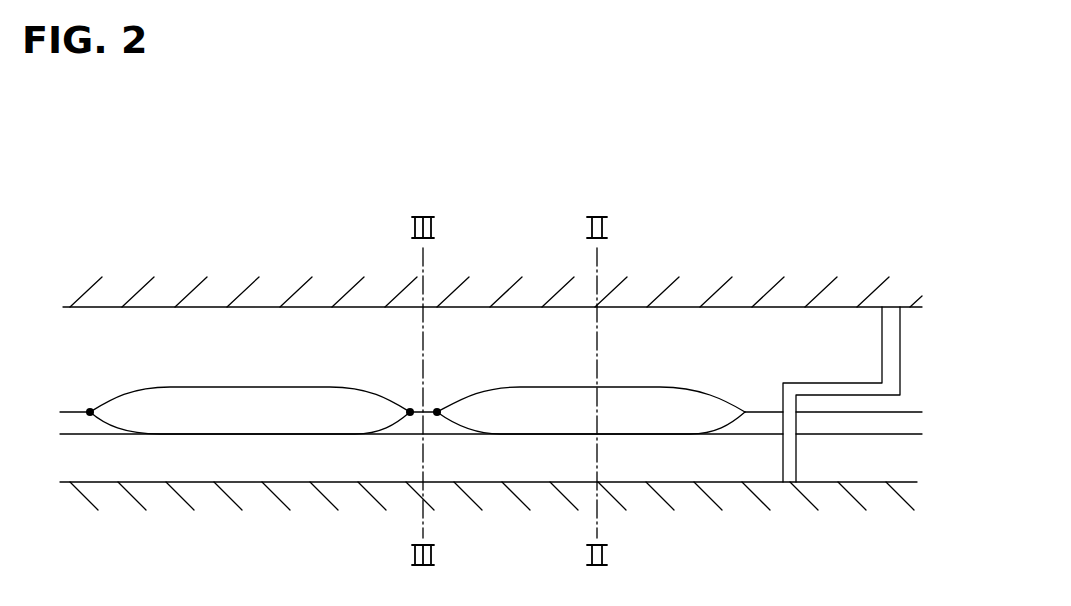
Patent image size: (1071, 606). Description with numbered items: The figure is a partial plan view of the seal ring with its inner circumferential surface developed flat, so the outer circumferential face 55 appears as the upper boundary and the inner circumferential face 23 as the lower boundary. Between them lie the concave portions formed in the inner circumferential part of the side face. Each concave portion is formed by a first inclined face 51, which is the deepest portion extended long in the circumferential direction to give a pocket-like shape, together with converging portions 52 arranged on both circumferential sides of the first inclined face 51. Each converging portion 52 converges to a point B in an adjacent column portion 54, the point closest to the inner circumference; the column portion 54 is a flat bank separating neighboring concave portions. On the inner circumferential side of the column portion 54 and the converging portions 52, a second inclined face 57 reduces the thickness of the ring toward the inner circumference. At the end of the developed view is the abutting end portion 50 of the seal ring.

The inner circumferential face 23 is at (532, 437).
The abutting end portion 50 is at (888, 322).
The first inclined face 51 is at (243, 413).
The converging portion 52 is at (127, 410).
The column portion 54 is at (77, 403).
The outer circumferential face 55 is at (268, 307).
The second inclined face 57 is at (412, 417).
The point B is at (88, 408).